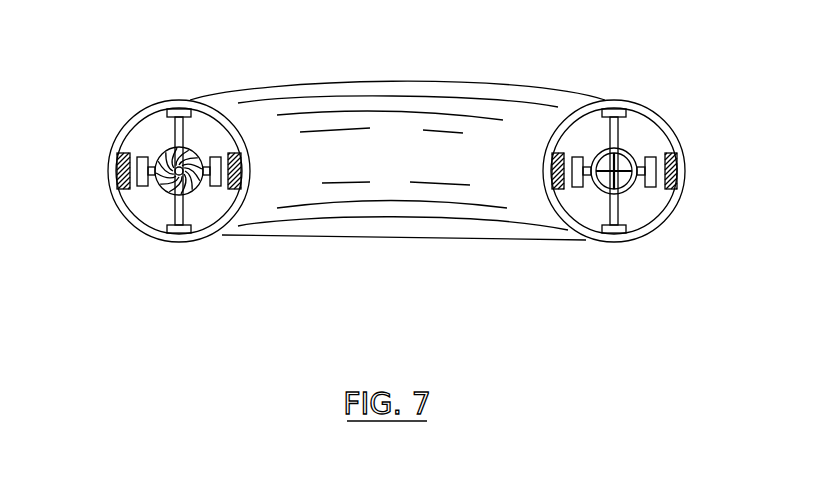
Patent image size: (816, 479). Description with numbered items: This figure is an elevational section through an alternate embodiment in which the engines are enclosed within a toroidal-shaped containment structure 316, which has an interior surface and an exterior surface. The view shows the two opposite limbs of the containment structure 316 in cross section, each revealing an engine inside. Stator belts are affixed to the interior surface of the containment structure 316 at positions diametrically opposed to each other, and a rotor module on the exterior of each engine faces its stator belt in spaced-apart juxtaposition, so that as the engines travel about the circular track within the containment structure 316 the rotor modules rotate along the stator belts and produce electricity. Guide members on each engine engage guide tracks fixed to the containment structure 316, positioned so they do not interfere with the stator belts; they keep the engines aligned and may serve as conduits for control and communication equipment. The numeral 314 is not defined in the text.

The end chamber 314 is at (208, 142).
The containment structure 316 is at (366, 82).